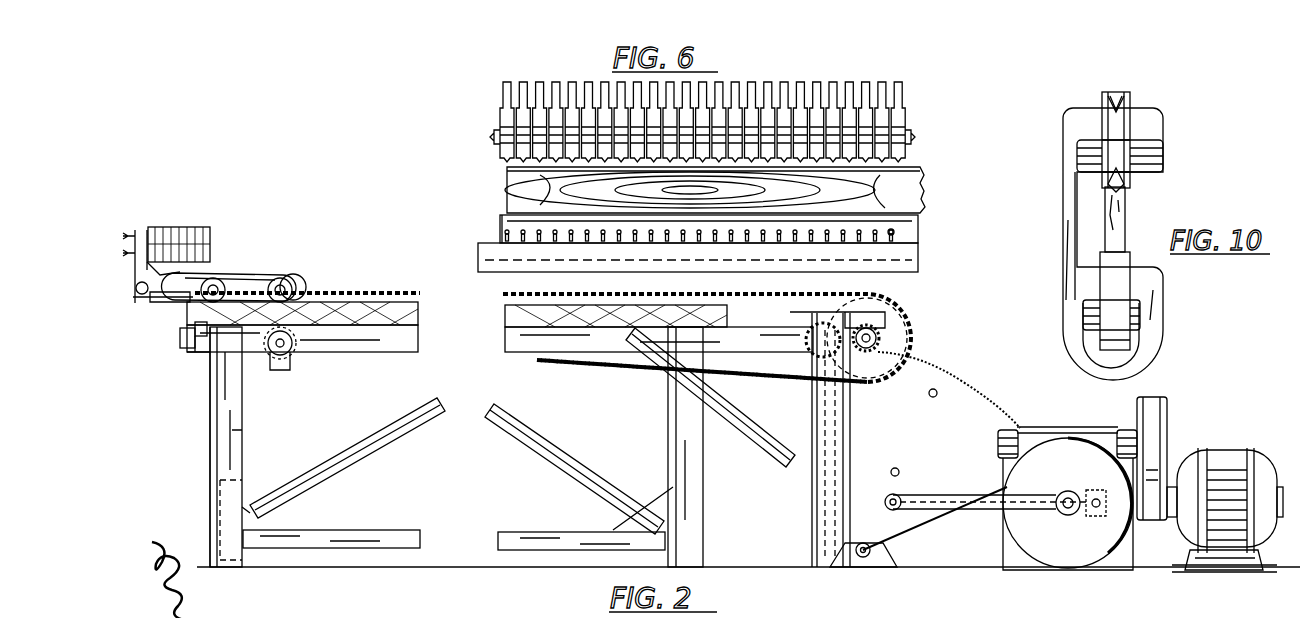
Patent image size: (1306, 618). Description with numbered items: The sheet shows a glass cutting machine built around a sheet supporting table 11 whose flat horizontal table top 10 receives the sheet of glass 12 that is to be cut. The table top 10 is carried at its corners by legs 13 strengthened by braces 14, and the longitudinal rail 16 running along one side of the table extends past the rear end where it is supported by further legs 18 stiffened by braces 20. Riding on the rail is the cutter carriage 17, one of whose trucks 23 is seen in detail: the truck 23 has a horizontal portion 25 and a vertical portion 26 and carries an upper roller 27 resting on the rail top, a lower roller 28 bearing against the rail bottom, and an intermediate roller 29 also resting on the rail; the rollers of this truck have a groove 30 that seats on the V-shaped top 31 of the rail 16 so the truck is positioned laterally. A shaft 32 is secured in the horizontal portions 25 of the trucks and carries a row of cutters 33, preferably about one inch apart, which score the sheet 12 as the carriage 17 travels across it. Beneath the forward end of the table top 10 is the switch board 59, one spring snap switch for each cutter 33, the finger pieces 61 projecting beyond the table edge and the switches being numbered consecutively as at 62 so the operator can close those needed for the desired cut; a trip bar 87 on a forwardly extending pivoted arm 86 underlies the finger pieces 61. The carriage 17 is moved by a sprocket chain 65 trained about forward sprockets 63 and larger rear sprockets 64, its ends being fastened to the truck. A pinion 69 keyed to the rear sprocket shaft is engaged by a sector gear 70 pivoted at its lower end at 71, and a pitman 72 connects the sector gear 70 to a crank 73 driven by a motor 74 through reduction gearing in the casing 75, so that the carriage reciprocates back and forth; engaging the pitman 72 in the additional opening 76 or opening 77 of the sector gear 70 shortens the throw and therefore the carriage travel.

In FIG. 6, the table top 10 is at (922, 178).
In FIG. 2, the table top 10 is at (418, 322).
In FIG. 2, the sheet supporting table 11 is at (204, 443).
In FIG. 6, the sheet of glass 12 is at (505, 160).
In FIG. 2, the sheet of glass 12 is at (415, 300).
In FIG. 2, the legs 13 is at (240, 470).
In FIG. 2, the braces 14 is at (375, 455).
In FIG. 10, the horizontal rail 16 is at (1118, 236).
In FIG. 2, the cutter carriage 17 is at (190, 215).
In FIG. 2, the legs 18 is at (810, 515).
In FIG. 2, the braces 20 is at (770, 418).
In FIG. 10, the bracket or truck 23 is at (1067, 188).
In FIG. 2, the bracket or truck 23 is at (278, 276).
In FIG. 2, the horizontal portion 25 is at (236, 274).
In FIG. 10, the vertical portion 26 is at (1112, 292).
In FIG. 2, the vertical portion 26 is at (287, 360).
In FIG. 10, the upper roller 27 is at (1130, 104).
In FIG. 2, the upper roller 27 is at (322, 262).
In FIG. 2, the lower roller 28 is at (268, 356).
In FIG. 2, the roller 29 is at (222, 272).
In FIG. 10, the groove 30 is at (1128, 70).
In FIG. 10, the V-shaped top 31 is at (1118, 192).
In FIG. 6, the shaft 32 is at (498, 132).
In FIG. 6, the cutters 33 is at (908, 132).
In FIG. 2, the cutters 33 is at (150, 304).
In FIG. 6, the switch board 59 is at (916, 222).
In FIG. 6, the finger pieces 61 is at (891, 236).
In FIG. 6, the switch numbering 62 is at (502, 222).
In FIG. 2, the sprockets 63 is at (195, 345).
In FIG. 2, the sprockets 64 is at (823, 358).
In FIG. 2, the sprocket chain 65 is at (600, 368).
In FIG. 2, the pinion 69 is at (880, 338).
In FIG. 2, the sector gear 70 is at (962, 398).
In FIG. 2, the pivot 71 is at (900, 552).
In FIG. 2, the pitman 72 is at (1000, 508).
In FIG. 2, the crank 73 is at (1085, 490).
In FIG. 2, the motor 74 is at (1222, 468).
In FIG. 2, the casing 75 is at (1045, 440).
In FIG. 2, the opening 76 is at (908, 458).
In FIG. 2, the opening 77 is at (930, 397).
In FIG. 2, the arm 86 is at (182, 330).
In FIG. 6, the trip bar 87 is at (500, 272).